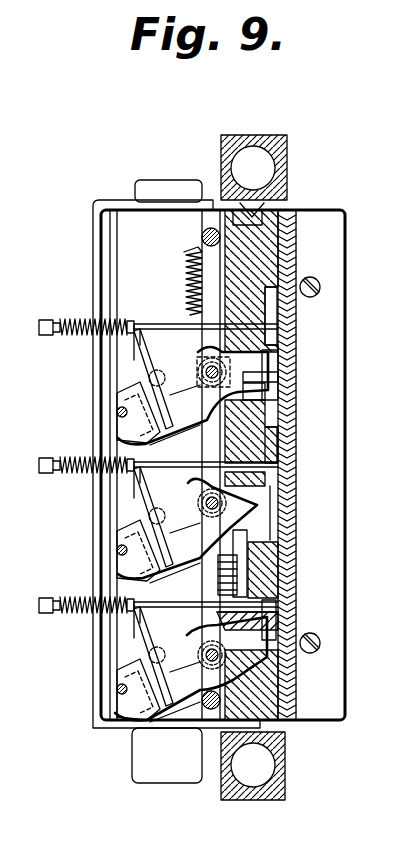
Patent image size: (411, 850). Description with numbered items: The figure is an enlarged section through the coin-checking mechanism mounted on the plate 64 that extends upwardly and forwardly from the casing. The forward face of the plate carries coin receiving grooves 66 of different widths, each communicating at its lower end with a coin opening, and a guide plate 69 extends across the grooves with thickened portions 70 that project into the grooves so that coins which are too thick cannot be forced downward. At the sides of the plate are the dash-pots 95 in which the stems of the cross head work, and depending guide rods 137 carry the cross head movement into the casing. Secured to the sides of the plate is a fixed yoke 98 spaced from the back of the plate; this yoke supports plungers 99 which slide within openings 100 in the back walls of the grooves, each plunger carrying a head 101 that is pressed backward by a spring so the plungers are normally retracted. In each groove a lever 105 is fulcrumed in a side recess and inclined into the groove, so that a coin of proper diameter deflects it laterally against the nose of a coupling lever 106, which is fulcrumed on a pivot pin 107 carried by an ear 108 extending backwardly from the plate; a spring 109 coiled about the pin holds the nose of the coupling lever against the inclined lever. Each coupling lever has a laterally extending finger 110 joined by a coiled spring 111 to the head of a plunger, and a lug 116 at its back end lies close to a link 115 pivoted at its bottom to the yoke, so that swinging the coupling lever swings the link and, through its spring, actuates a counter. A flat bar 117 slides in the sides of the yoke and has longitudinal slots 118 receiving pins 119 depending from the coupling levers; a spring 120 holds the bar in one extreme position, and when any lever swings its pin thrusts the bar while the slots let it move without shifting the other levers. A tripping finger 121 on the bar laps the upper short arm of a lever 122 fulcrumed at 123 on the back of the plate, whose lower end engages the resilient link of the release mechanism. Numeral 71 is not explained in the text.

The plate 64 is at (262, 236).
The coin receiving grooves 66 is at (294, 270).
The guide plate 69 is at (286, 380).
The thickened portions 70 is at (303, 297).
The guide 71 is at (290, 500).
The dash-pot 95 is at (270, 136).
The fixed yoke 98 is at (96, 728).
The plungers 99 is at (160, 327).
The openings 100 is at (262, 330).
The head 101 is at (47, 320).
The lever 105 is at (276, 346).
The coupling lever 106 is at (185, 436).
The pivot pin 107 is at (200, 392).
The ear 108 is at (220, 520).
The spring 109 is at (210, 365).
The finger 110 is at (140, 350).
The coiled spring 111 is at (70, 318).
The link 115 is at (118, 410).
The lug 116 is at (128, 425).
The flat bar 117 is at (148, 185).
The longitudinal slots 118 is at (110, 752).
The pins 119 is at (163, 324).
The spring 120 is at (184, 260).
The tripping finger 121 is at (270, 602).
The lever 122 is at (240, 528).
The fulcrum 123 is at (218, 580).
The guide rods 137 is at (210, 228).